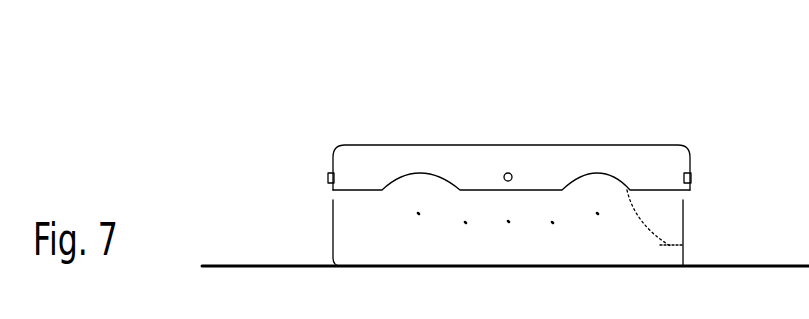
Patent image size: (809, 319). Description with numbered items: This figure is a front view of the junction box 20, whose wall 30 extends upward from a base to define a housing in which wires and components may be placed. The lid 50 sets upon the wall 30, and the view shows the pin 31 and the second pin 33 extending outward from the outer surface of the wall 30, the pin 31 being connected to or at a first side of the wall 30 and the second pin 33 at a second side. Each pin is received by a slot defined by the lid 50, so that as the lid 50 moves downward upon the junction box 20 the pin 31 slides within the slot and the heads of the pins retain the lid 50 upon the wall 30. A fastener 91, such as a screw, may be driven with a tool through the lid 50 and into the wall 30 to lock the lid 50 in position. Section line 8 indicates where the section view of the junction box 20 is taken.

The junction box 20 is at (292, 100).
The lid 50 is at (539, 158).
The wall 30 is at (330, 225).
The second pin 33 is at (326, 177).
The pin 31 is at (692, 178).
The fastener 91 is at (506, 166).
The section line 8- 8 is at (640, 145).